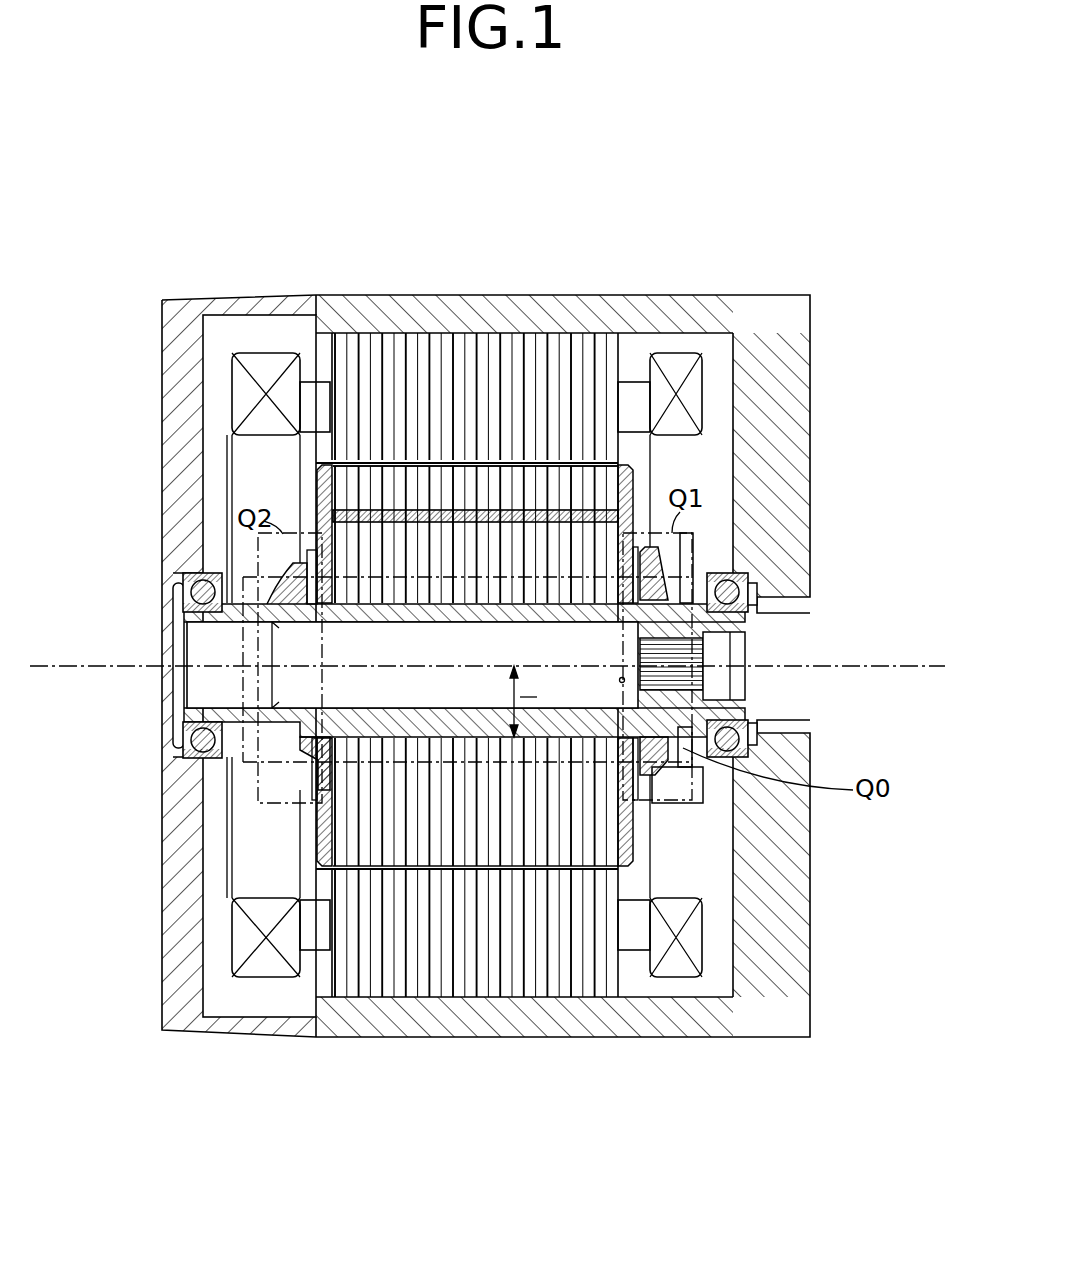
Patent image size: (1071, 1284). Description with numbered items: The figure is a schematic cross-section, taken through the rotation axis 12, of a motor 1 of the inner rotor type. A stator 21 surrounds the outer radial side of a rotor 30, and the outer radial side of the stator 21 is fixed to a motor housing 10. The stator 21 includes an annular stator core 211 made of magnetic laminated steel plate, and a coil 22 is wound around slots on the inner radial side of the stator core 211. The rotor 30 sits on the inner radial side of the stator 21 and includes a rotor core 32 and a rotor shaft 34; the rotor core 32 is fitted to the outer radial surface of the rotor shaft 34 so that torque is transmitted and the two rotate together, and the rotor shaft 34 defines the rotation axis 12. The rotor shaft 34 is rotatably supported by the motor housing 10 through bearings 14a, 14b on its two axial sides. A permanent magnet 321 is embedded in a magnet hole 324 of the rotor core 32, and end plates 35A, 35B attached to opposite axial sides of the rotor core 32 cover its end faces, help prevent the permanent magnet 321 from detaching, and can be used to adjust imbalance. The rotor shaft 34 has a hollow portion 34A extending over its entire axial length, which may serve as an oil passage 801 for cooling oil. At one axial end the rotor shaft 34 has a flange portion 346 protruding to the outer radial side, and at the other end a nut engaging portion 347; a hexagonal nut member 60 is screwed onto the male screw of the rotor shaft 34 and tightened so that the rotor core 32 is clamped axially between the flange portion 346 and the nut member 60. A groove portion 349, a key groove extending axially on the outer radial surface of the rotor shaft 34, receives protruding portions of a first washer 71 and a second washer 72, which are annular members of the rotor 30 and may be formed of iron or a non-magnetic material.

The motor 1 is at (530, 180).
The motor housing 10 is at (787, 312).
The rotation axis 12 is at (132, 660).
The bearing 14a is at (200, 748).
The bearing 14b is at (730, 573).
The stator 21 is at (470, 352).
The stator core 211 is at (466, 962).
The coil 22 is at (633, 372).
The rotor 30 is at (282, 836).
The rotor core 32 is at (563, 492).
The permanent magnet 321 is at (494, 485).
The magnet hole 324 is at (370, 512).
The rotor shaft 34 is at (290, 737).
The hollow portion 34A is at (412, 687).
The flange portion 346 is at (290, 755).
The nut engaging portion 347 is at (672, 745).
The groove portion 349 is at (370, 605).
The end plate 35A is at (319, 481).
The end plate 35B is at (624, 482).
The nut member 60 is at (662, 726).
The first washer 71 is at (313, 772).
The second washer 72 is at (645, 733).
The oil passage 801 is at (482, 697).